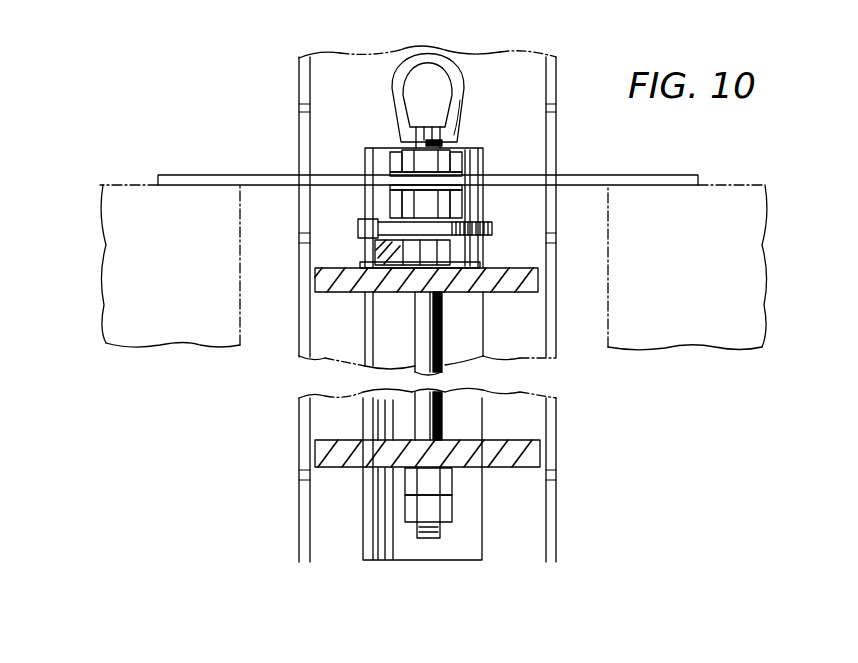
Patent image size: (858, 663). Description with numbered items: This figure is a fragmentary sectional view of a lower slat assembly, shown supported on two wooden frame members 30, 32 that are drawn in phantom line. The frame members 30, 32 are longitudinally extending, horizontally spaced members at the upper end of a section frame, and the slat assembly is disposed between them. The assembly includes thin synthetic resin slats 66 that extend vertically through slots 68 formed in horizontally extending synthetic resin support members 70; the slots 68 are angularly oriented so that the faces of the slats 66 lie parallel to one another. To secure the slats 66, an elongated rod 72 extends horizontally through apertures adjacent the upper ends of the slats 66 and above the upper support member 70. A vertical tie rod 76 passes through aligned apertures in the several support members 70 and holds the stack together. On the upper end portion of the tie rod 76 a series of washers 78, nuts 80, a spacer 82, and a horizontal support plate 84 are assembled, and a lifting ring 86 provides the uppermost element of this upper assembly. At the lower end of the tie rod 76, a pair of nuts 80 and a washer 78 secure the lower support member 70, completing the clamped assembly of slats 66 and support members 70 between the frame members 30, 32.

The wooden frame member 30 is at (750, 222).
The wooden frame member 32 is at (198, 346).
The slat 66 is at (477, 491).
The slot 68 is at (481, 282).
The support member 70 is at (538, 278).
The elongated rod 72 is at (360, 250).
The tie rod 76 is at (440, 348).
The washer 78 is at (400, 215).
The nut 80 is at (428, 200).
The spacer 82 is at (494, 230).
The horizontal support plate 84 is at (656, 184).
The lifting ring 86 is at (464, 96).